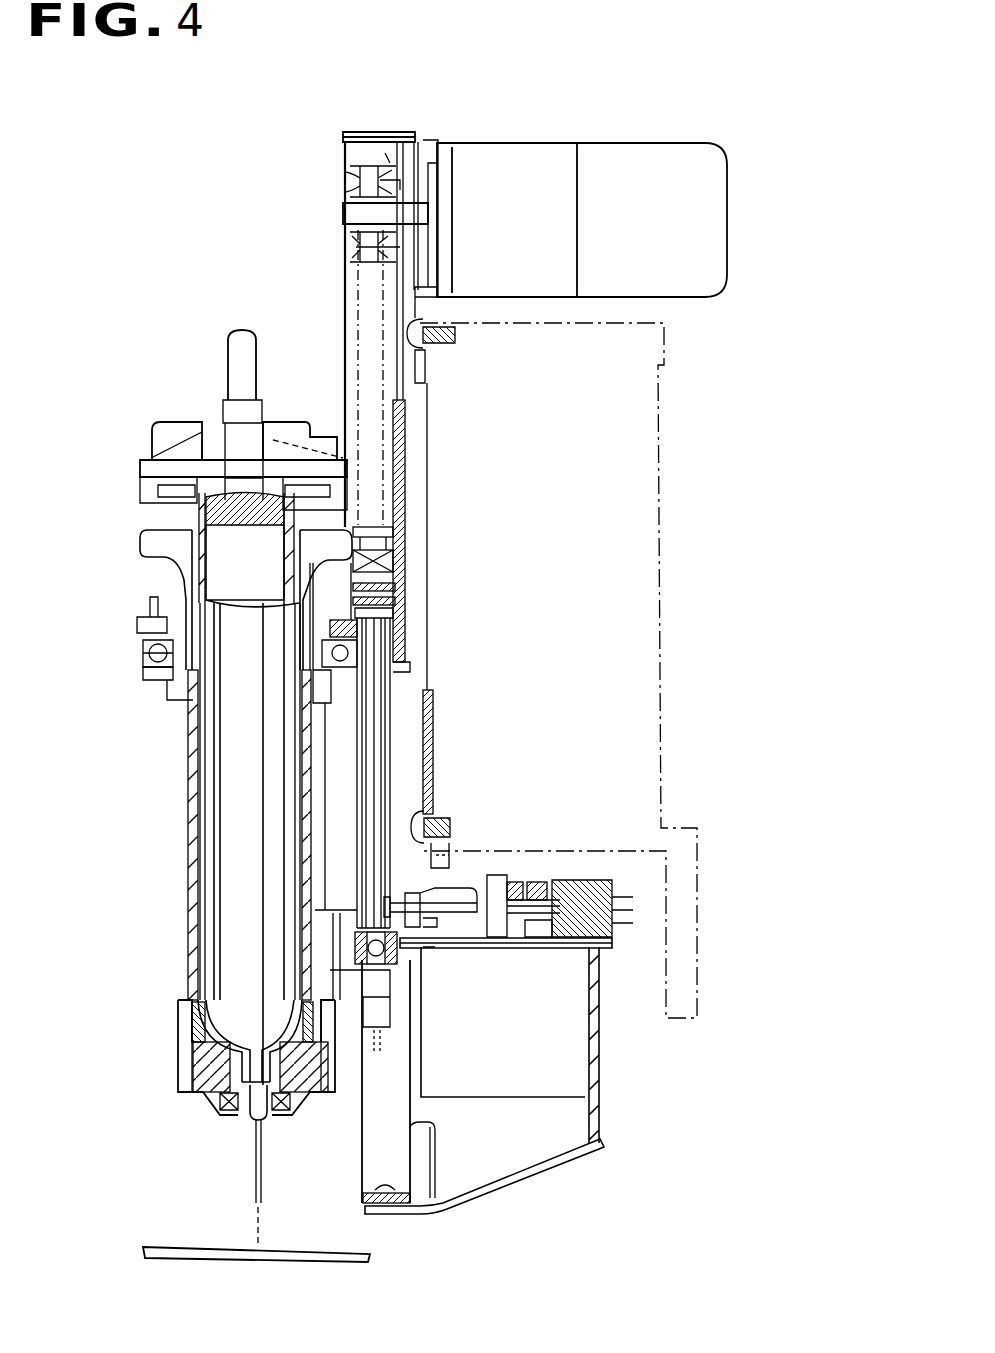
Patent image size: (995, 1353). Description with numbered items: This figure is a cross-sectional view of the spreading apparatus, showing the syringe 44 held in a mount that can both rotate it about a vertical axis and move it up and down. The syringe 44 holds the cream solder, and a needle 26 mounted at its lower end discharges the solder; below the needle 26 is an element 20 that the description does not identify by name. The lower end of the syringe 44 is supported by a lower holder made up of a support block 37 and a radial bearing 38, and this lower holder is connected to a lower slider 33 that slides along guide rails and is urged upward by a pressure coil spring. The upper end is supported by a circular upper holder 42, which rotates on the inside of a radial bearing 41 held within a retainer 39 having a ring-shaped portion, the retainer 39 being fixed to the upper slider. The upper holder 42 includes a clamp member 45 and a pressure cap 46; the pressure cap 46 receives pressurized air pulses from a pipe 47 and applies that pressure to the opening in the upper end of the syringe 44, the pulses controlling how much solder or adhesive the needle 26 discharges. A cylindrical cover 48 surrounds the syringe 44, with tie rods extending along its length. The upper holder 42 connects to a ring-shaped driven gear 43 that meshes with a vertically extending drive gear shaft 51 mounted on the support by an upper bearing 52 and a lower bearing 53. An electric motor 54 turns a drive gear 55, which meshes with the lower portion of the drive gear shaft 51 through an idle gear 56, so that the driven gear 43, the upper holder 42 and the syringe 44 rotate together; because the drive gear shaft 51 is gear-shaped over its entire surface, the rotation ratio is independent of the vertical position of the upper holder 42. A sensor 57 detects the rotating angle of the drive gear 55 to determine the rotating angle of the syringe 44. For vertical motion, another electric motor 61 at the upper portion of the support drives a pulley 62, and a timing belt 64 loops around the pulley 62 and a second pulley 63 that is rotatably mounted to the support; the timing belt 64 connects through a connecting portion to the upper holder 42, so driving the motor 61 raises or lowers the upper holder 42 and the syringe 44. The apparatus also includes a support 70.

The base plate / workpiece 20 is at (314, 1250).
The needle 26 is at (255, 1170).
The lower slider 33 is at (352, 1075).
The support block 37 is at (193, 1052).
The radial bearing 38 is at (222, 1120).
The retainer 39 is at (143, 672).
The radial bearing 41 is at (143, 652).
The upper holder 42 is at (172, 597).
The driven gear 43 is at (138, 622).
The syringe 44 is at (214, 798).
The clamp member 45 is at (165, 435).
The pressure cap 46 is at (244, 478).
The pipe 47 is at (238, 340).
The cylindrical cover 48 is at (190, 902).
The drive gear shaft 51 is at (372, 740).
The upper bearing 52 is at (392, 606).
The lower bearing 53 is at (400, 953).
The electric motor 54 is at (513, 1083).
The drive gear 55 is at (550, 882).
The idle gear 56 is at (437, 895).
The sensor 57 is at (604, 882).
The electric motor 61 is at (544, 262).
The pulley 62 is at (354, 188).
The second pulley 63 is at (400, 530).
The timing belt 64 is at (352, 300).
The support 70 is at (455, 1212).